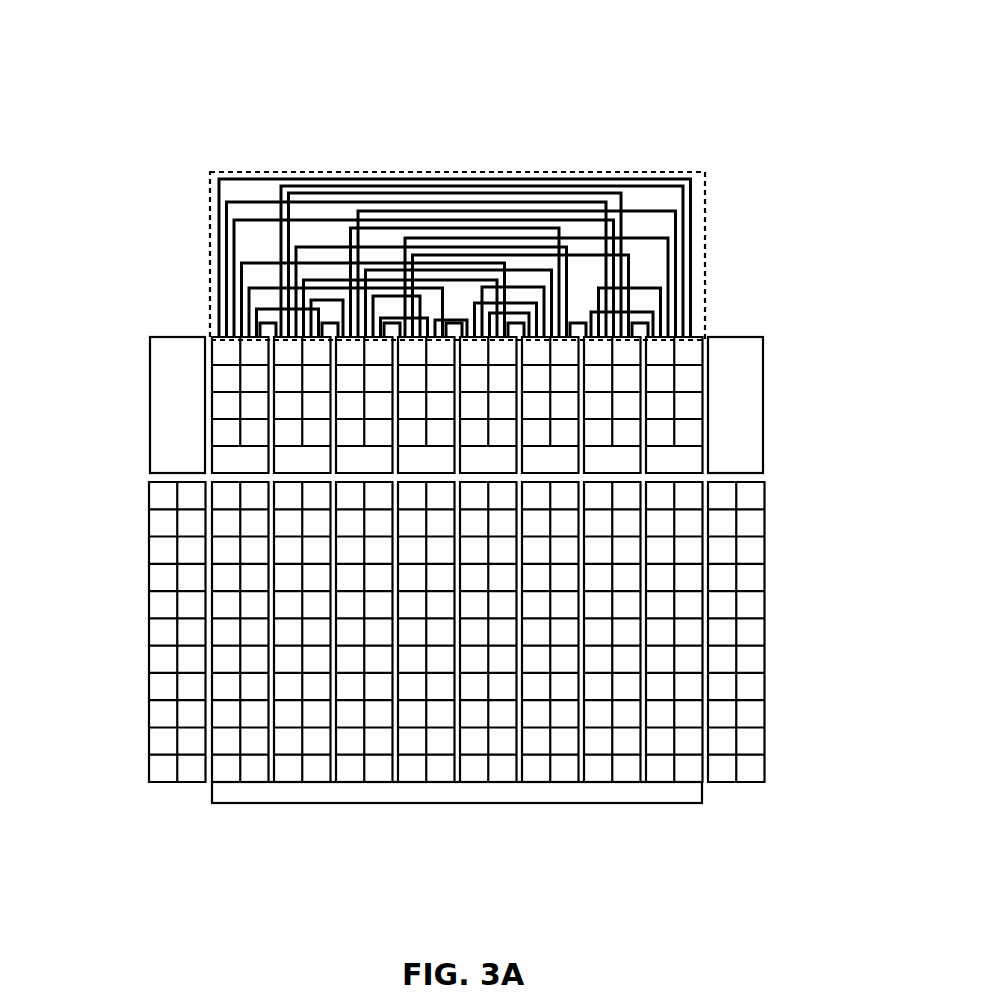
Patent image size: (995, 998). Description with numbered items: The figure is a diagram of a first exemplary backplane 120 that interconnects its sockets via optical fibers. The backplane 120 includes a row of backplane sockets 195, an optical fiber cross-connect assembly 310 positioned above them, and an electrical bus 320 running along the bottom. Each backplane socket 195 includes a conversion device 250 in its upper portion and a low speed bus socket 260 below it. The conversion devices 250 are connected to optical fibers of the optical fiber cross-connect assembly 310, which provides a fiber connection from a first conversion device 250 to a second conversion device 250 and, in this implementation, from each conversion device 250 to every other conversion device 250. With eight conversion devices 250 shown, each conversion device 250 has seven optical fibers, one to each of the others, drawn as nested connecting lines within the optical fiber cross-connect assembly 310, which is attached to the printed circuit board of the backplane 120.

The backplane 120 is at (166, 92).
The backplane socket 195 is at (147, 776).
The conversion device 250 is at (730, 342).
The low speed bus socket 260 is at (763, 782).
The optical fiber cross-connect assembly 310 is at (462, 172).
The electrical bus 320 is at (703, 793).